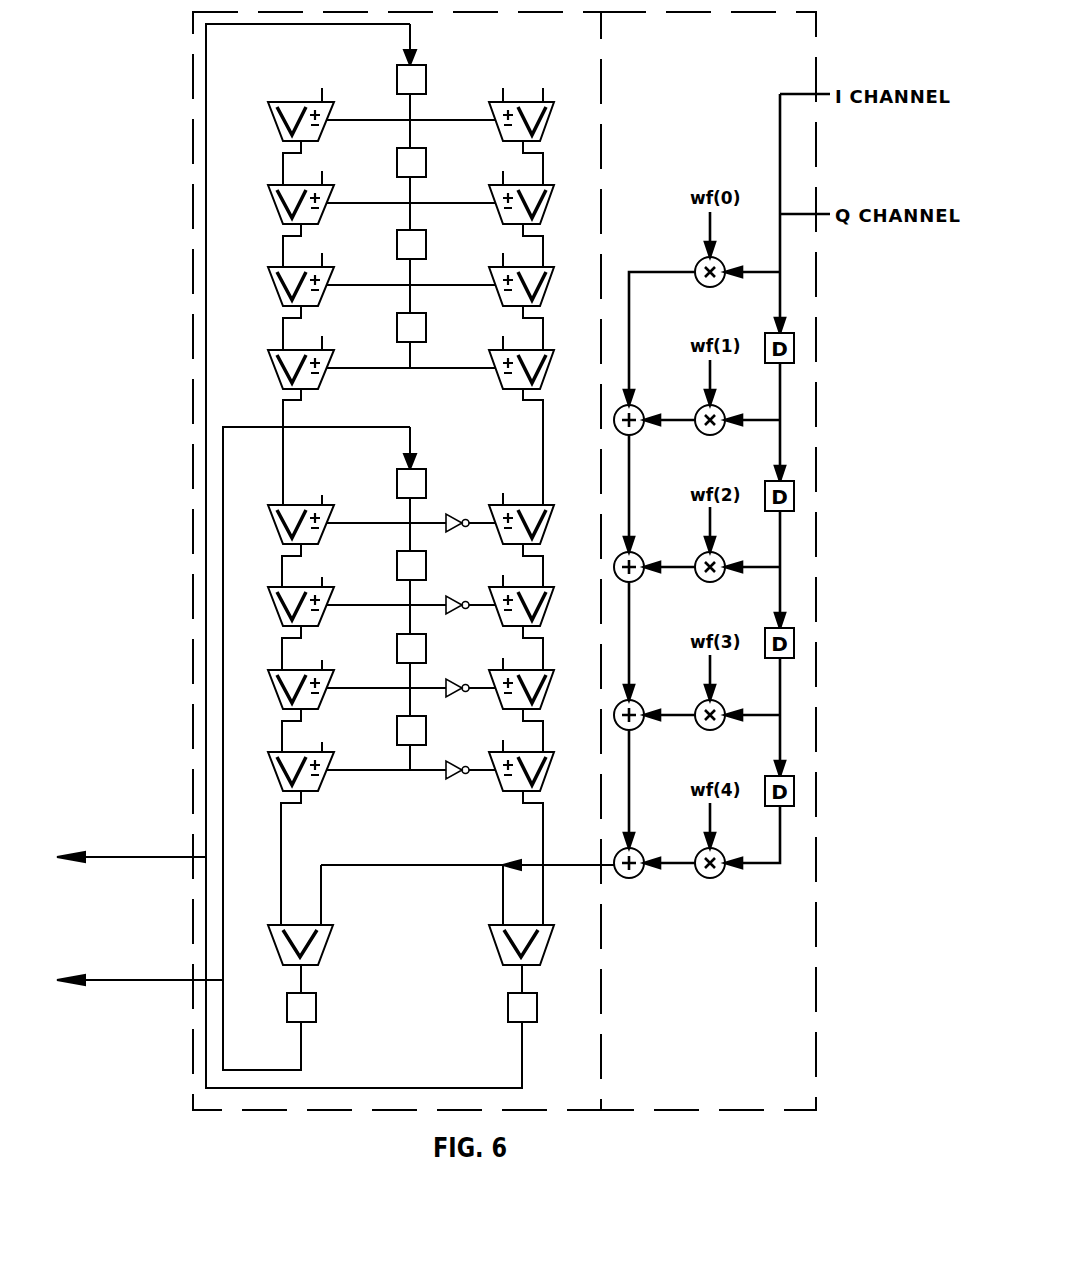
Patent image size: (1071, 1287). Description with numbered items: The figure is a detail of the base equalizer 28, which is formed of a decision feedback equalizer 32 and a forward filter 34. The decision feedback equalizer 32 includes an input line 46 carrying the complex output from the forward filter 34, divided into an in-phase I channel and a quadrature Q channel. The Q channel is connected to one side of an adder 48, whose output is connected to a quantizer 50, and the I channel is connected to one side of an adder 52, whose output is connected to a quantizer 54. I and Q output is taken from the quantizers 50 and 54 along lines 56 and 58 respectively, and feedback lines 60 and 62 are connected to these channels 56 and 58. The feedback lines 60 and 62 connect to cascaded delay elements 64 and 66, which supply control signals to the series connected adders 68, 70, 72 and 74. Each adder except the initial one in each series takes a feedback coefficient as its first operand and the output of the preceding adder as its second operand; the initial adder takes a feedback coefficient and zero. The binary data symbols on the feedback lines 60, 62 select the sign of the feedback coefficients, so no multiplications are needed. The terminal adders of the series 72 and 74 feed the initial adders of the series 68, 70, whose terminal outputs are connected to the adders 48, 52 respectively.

The base equalizer 28 is at (558, 585).
The decision feedback equalizer 32 is at (563, 1112).
The forward filter 34 is at (670, 1112).
The input line 46 is at (553, 866).
The adder 48 is at (275, 941).
The quantizer 50 is at (287, 1010).
The adder 52 is at (548, 941).
The quantizer 54 is at (508, 1010).
The I output line 56 is at (100, 860).
The Q output line 58 is at (100, 983).
The feedback line 60 is at (222, 672).
The feedback line 62 is at (206, 735).
The cascaded delay elements 64 is at (397, 743).
The cascaded delay elements 66 is at (397, 338).
The series connected adders 68 is at (272, 762).
The series connected adders 70 is at (550, 764).
The series connected adders 72 is at (272, 358).
The series connected adders 74 is at (549, 362).